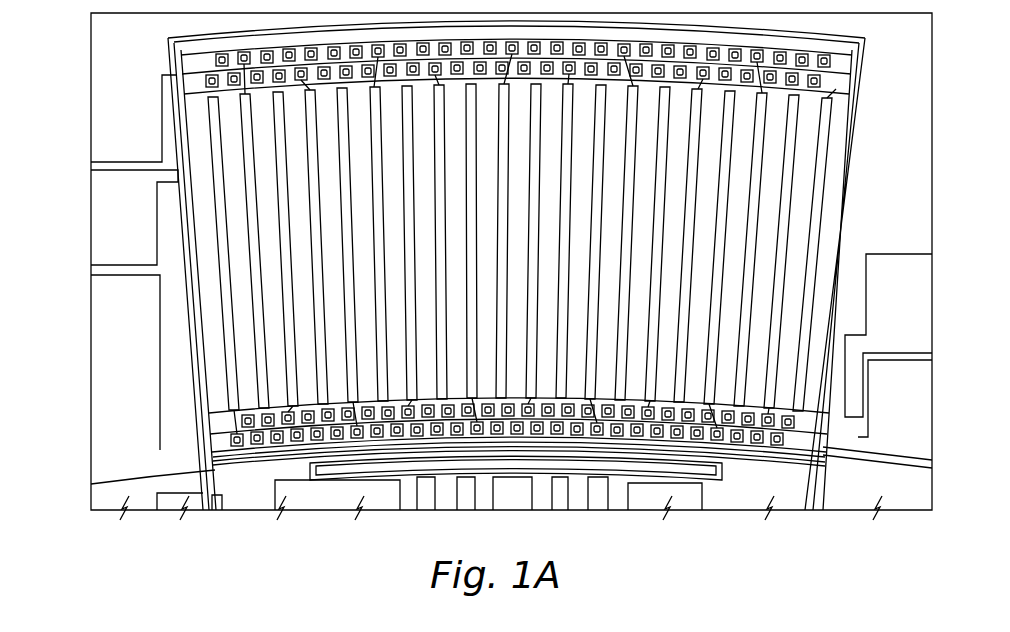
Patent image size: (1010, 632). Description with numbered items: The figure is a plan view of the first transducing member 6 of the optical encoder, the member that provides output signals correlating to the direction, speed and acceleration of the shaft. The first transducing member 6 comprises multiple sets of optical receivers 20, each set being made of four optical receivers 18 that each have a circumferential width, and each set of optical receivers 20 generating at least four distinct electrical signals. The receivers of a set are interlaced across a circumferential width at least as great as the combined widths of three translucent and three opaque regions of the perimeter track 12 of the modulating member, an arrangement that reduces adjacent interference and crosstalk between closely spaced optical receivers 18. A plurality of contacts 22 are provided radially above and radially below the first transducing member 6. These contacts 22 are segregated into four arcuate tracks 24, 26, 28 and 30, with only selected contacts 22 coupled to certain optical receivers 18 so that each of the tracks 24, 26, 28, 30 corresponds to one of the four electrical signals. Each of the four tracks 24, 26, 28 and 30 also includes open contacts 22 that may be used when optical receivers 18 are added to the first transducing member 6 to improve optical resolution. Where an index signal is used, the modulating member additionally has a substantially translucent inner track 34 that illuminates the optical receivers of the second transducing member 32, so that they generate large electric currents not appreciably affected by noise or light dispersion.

The first transducing member 6 is at (184, 217).
The perimeter track 12 is at (858, 128).
The optical receiver 18 is at (228, 350).
The set of optical receivers 20 is at (240, 412).
The contacts 22 is at (830, 60).
The arcuate track 24 is at (199, 62).
The arcuate track 26 is at (192, 83).
The arcuate track 28 is at (219, 422).
The arcuate track 30 is at (219, 445).
The second transducing member 32 is at (702, 495).
The inner track 34 is at (279, 495).